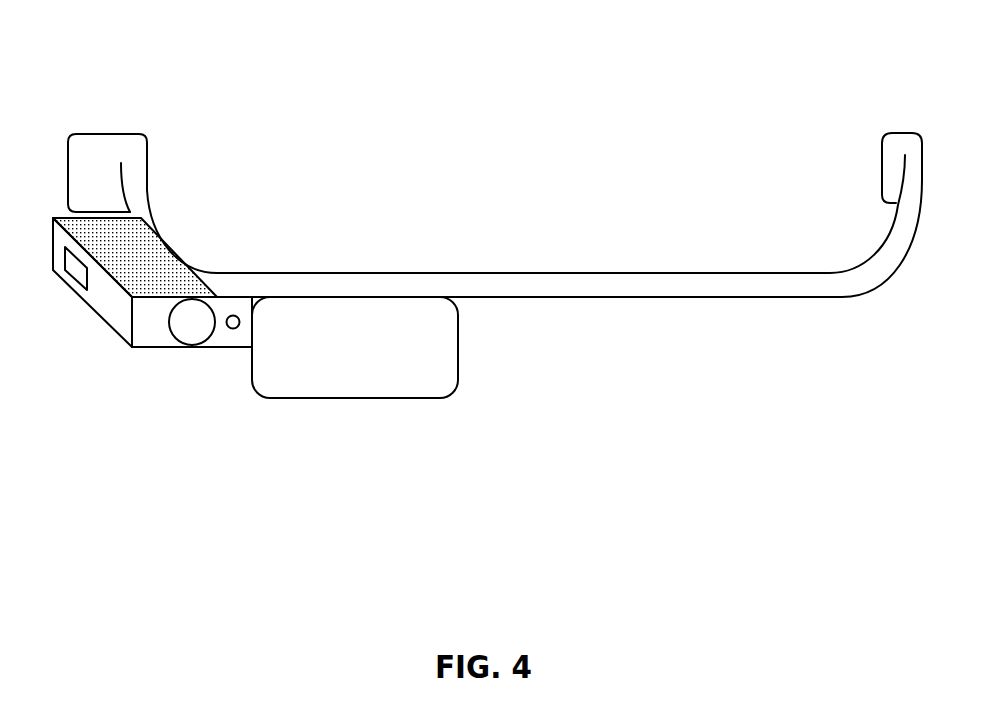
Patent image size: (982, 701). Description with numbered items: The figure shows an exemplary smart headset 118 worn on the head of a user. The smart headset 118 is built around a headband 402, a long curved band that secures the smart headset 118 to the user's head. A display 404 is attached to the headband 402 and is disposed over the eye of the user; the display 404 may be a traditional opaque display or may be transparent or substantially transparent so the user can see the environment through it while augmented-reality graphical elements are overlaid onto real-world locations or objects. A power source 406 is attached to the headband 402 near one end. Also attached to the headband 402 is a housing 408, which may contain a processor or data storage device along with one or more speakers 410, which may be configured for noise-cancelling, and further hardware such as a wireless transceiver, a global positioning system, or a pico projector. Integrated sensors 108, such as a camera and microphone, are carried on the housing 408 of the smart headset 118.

The smart headset 118 is at (163, 51).
The headband 402 is at (528, 272).
The power source 406 is at (82, 135).
The housing 408 is at (100, 315).
The speakers 410 is at (73, 277).
The integrated sensors 108 is at (232, 329).
The display 404 is at (352, 398).